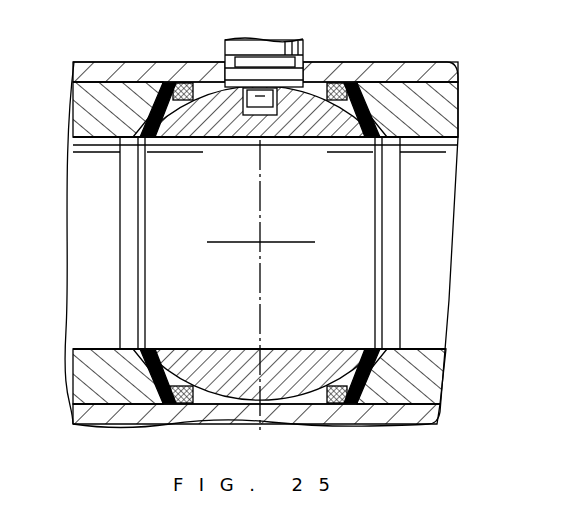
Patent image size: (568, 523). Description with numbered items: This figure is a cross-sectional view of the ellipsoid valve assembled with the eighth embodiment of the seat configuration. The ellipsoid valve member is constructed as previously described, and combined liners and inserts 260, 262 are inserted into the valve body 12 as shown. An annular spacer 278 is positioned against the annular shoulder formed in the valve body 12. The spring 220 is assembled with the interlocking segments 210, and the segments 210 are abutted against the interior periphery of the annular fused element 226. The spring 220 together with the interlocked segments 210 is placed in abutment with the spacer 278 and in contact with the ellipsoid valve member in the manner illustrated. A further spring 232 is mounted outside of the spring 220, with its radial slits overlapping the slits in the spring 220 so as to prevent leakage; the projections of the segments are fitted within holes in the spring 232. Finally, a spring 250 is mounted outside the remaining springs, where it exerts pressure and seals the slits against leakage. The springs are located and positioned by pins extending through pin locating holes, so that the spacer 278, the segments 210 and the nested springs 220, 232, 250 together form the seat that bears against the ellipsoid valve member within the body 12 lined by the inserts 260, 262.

The valve body 12 is at (321, 60).
The interlocking segments 210 is at (440, 46).
The spring 220 is at (343, 82).
The annular fused element 226 is at (438, 87).
The spring 232 is at (372, 366).
The spring 250 is at (432, 395).
The combined liner and insert 260 is at (74, 106).
The combined liner and insert 262 is at (437, 111).
The annular spacer 278 is at (185, 405).